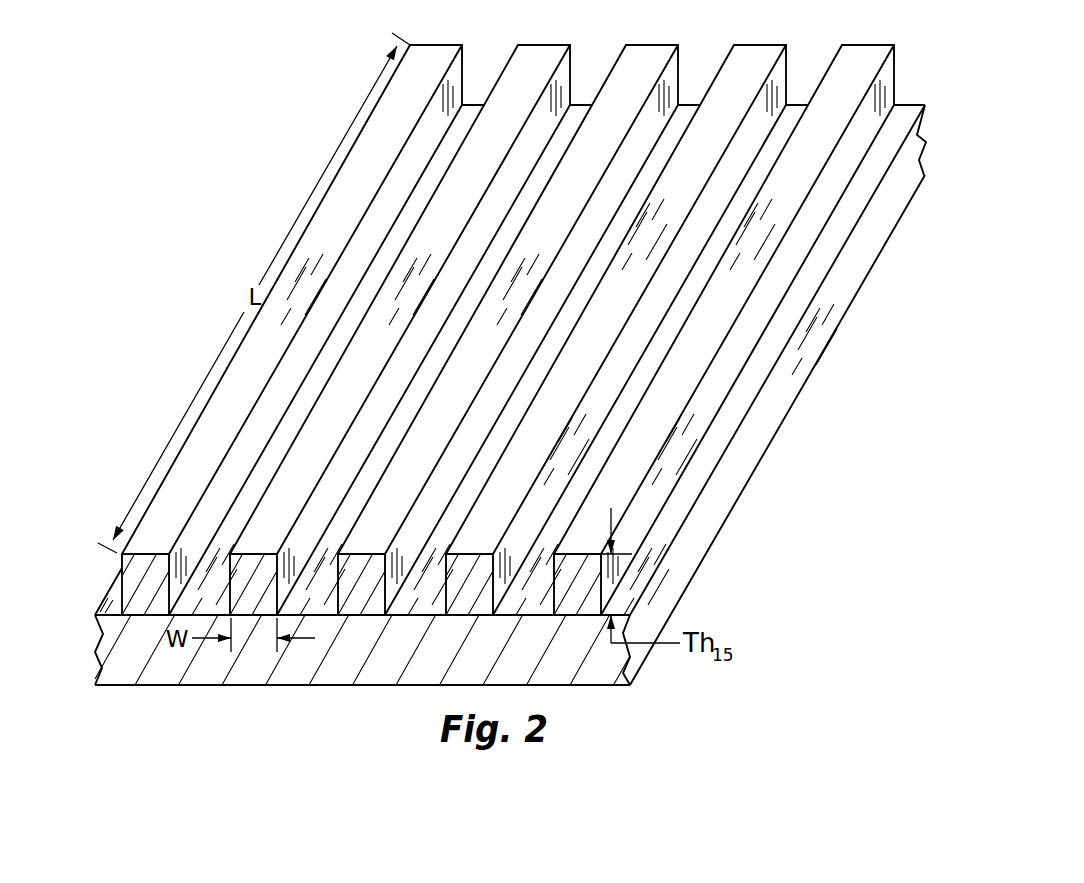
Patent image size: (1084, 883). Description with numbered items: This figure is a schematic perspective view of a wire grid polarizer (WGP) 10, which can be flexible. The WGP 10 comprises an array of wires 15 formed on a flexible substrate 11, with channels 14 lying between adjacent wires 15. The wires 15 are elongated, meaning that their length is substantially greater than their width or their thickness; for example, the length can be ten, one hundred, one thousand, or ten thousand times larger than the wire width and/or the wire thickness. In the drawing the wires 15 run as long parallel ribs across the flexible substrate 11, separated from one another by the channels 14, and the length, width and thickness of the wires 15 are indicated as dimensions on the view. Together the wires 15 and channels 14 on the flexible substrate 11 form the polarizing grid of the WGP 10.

The wire grid polarizer 10 is at (125, 228).
The flexible substrate 11 is at (345, 668).
The channels 14 is at (818, 87).
The wires 15 is at (591, 600).